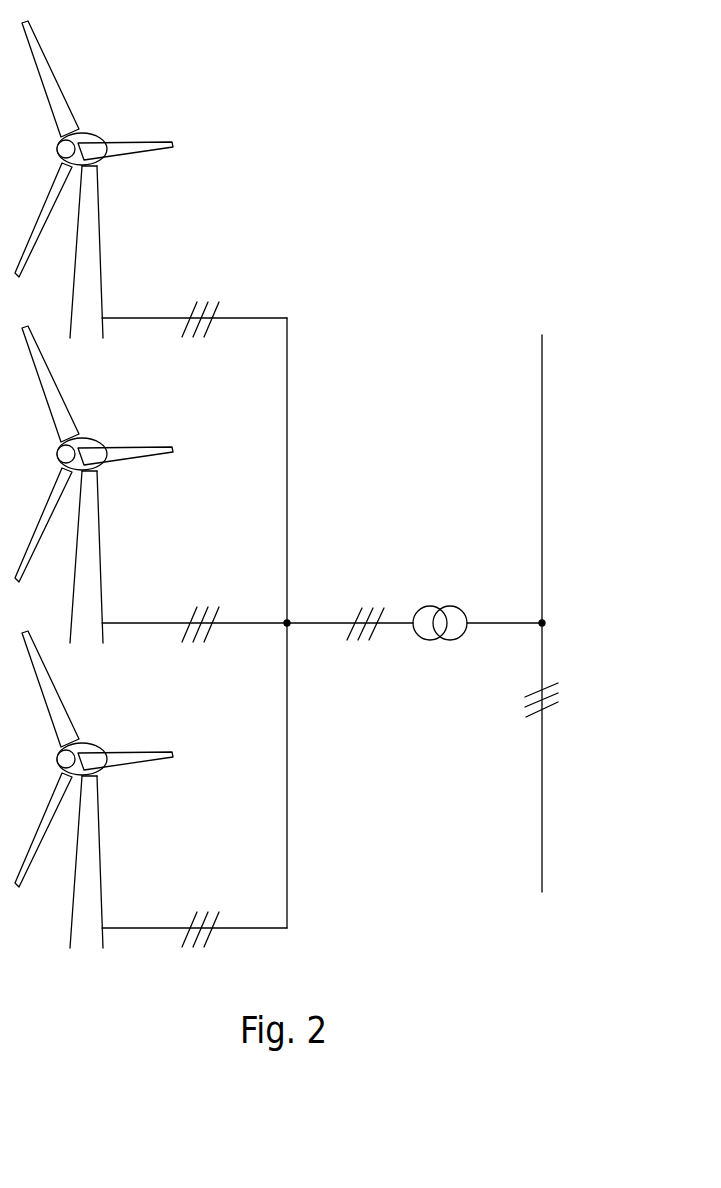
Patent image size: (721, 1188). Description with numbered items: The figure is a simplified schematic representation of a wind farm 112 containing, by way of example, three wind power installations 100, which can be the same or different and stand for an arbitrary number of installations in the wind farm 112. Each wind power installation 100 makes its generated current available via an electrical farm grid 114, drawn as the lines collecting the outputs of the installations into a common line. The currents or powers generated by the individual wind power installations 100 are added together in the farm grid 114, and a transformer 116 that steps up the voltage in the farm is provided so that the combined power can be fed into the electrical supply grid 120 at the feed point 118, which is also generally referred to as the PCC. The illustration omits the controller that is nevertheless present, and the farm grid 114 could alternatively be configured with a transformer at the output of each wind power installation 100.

The wind power installation 100 is at (88, 252).
The wind farm 112 is at (411, 265).
The electrical farm grid 114 is at (310, 622).
The transformer 116 is at (442, 591).
The feed point 118 is at (556, 602).
The electrical supply grid 120 is at (542, 398).